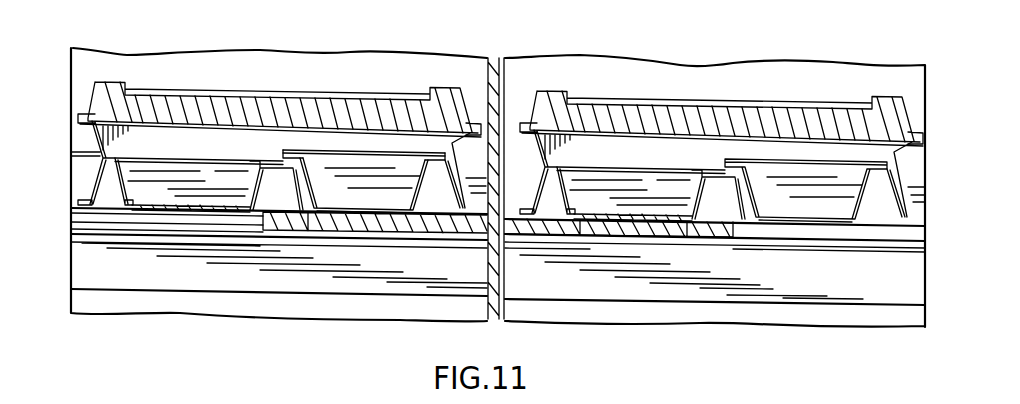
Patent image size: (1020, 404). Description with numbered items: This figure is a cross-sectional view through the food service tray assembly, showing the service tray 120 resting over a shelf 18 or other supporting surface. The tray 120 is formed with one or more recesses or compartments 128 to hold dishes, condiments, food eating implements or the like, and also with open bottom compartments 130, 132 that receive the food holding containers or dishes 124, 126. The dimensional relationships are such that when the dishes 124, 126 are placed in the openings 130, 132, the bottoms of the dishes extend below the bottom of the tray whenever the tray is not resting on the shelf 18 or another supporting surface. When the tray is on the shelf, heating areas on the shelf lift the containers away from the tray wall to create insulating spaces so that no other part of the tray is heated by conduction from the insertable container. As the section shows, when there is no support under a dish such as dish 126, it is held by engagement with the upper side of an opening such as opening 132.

The shelf 18 is at (542, 232).
The service tray 120 is at (645, 230).
The food holding container or dish 124 is at (375, 197).
The food holding container or dish 126 is at (812, 230).
The recess or compartment 128 is at (605, 197).
The open bottom compartment 130 is at (307, 157).
The open bottom compartment 132 is at (750, 190).